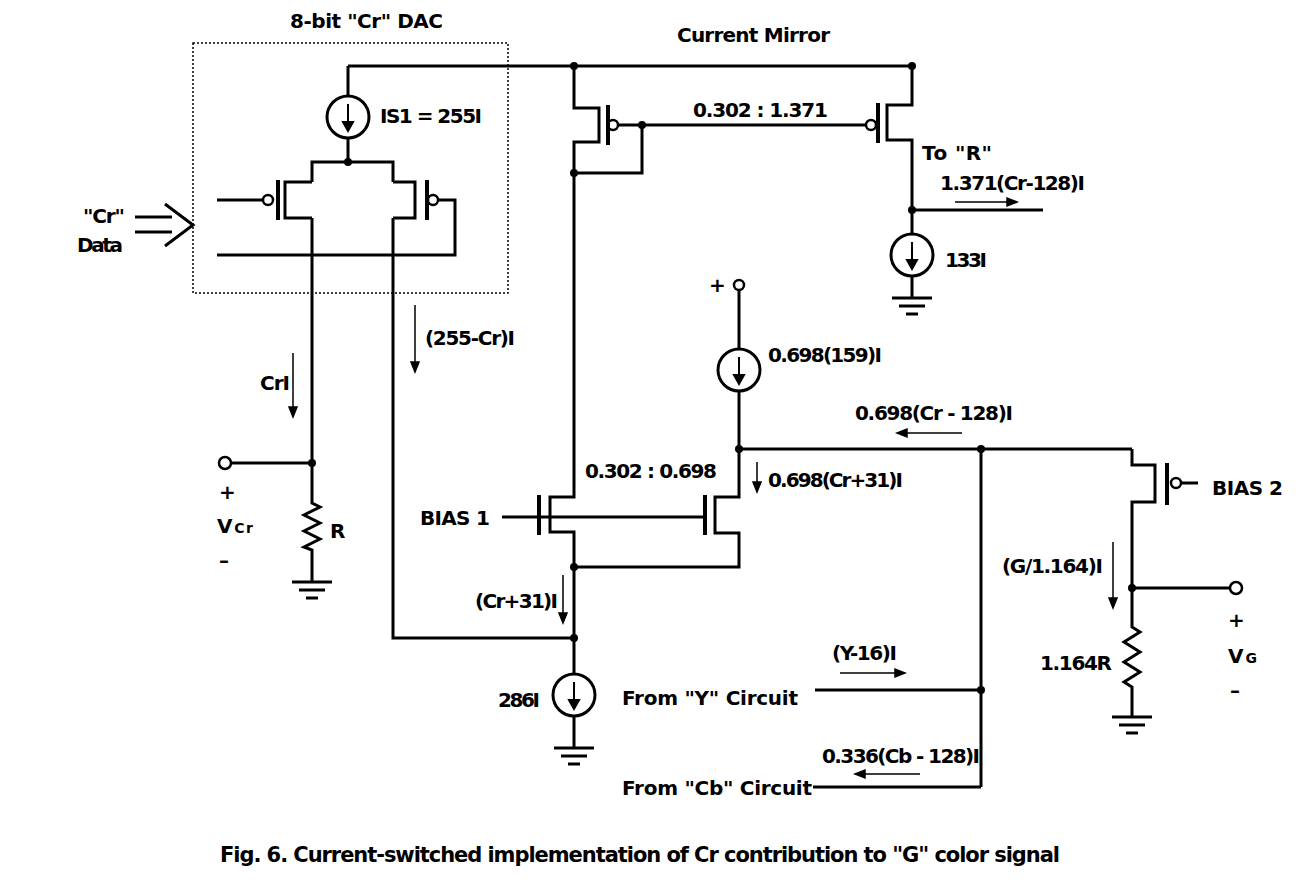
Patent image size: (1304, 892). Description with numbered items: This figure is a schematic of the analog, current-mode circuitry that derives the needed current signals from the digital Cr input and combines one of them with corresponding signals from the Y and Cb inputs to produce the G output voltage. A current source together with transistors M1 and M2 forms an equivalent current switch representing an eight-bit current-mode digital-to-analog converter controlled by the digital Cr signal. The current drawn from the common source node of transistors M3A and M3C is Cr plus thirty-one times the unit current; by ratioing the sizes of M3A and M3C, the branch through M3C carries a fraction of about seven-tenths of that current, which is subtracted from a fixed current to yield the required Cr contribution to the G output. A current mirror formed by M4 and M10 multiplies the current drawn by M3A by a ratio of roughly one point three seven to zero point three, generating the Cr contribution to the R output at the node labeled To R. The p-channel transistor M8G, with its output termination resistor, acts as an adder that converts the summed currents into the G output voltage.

The transistor M1 is at (279, 200).
The transistor M2 is at (336, 217).
The current mirror transistor M4 is at (699, 119).
The current mirror transistor M10 is at (914, 138).
The transistor M3A is at (547, 405).
The transistor M3C is at (687, 508).
The p-channel transistor M8G is at (1144, 518).